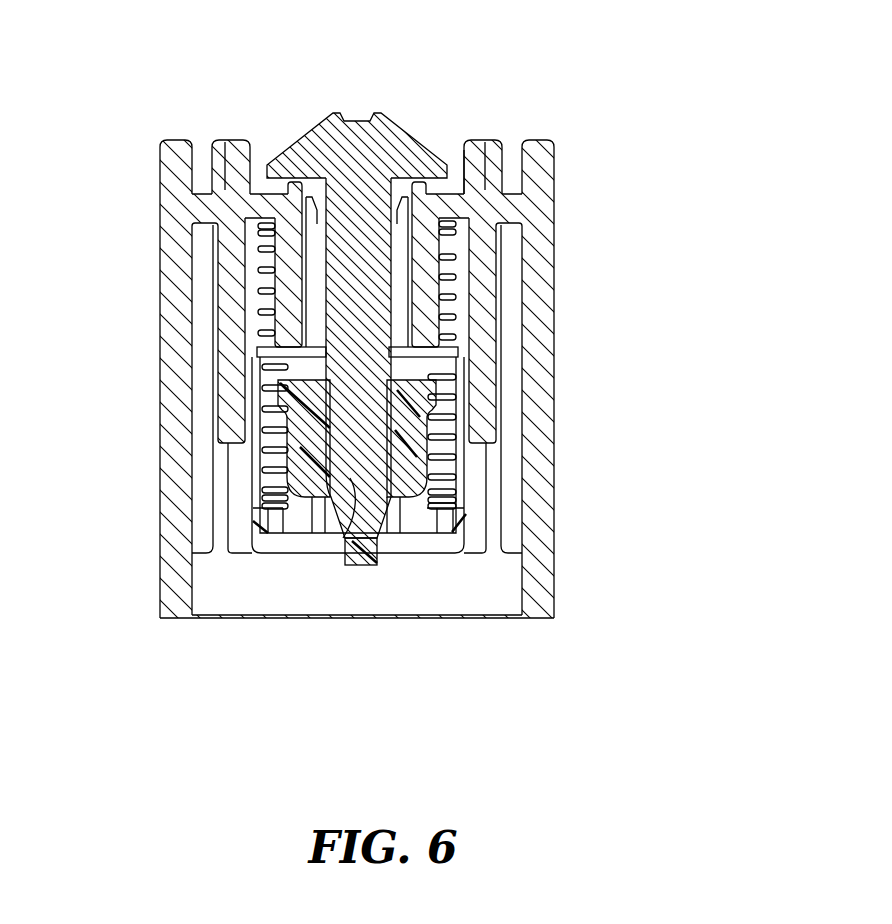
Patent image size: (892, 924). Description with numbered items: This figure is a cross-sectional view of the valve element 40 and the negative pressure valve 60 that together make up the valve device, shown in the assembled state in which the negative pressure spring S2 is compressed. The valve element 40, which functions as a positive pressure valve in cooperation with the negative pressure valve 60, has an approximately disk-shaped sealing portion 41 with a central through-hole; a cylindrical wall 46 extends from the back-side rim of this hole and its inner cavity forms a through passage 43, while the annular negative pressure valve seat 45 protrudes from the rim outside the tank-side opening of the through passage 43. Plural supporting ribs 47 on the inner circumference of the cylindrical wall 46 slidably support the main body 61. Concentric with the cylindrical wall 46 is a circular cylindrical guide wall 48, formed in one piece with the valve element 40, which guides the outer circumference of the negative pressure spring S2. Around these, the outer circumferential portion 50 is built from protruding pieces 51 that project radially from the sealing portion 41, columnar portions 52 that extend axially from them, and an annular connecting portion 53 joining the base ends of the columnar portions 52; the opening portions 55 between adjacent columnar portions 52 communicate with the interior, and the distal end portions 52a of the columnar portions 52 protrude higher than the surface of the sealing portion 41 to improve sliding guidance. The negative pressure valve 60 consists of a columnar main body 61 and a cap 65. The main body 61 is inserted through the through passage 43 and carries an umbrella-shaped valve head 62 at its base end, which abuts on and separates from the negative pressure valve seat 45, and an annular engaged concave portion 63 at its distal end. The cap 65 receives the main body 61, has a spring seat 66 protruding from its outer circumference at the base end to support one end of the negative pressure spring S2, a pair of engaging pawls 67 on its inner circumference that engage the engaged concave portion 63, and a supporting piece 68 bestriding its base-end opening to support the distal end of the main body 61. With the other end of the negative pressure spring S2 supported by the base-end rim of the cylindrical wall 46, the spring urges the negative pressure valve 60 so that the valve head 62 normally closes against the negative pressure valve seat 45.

The valve element 40 is at (541, 126).
The sealing portion 41 is at (473, 193).
The through passage 43 is at (433, 300).
The negative pressure valve seat 45 is at (288, 188).
The cylindrical wall 46 is at (433, 327).
The supporting ribs 47 is at (400, 265).
The guide wall 48 is at (232, 347).
The outer circumferential portion 50 is at (153, 260).
The protruding pieces 51 is at (510, 207).
The columnar portions 52 is at (221, 148).
The distal end portions 52a is at (170, 158).
The annular connecting portion 53 is at (490, 603).
The opening portions 55 is at (205, 507).
The negative pressure valve 60 is at (385, 108).
The main body 61 is at (367, 197).
The valve head 62 is at (306, 135).
The engaged concave portion 63 is at (357, 497).
The cap 65 is at (271, 562).
The spring seat 66 is at (467, 518).
The engaging pawls 67 is at (318, 497).
The supporting piece 68 is at (363, 556).
The negative pressure spring S2 is at (463, 455).